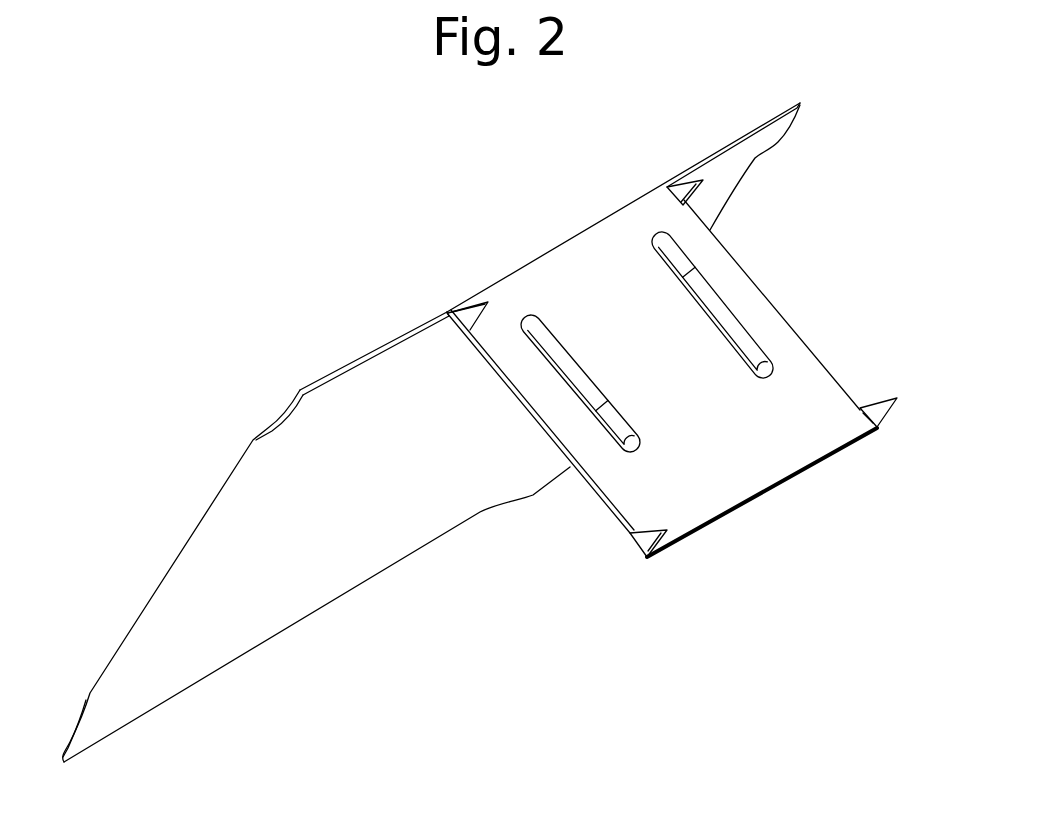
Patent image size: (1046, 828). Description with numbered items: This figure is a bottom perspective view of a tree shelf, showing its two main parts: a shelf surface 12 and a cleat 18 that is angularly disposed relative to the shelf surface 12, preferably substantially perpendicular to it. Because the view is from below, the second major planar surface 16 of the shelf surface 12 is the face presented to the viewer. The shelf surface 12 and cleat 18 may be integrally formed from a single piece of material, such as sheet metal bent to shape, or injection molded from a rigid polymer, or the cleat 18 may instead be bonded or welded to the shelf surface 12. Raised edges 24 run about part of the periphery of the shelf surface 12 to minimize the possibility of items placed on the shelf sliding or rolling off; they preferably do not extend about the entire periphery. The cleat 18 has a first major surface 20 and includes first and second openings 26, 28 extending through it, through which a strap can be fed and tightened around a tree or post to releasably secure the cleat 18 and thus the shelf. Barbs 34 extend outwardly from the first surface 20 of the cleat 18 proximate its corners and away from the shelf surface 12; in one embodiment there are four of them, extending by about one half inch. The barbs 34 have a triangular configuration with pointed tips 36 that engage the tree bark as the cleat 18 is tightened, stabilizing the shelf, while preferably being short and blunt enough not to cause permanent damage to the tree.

The shelf surface 12 is at (263, 370).
The second major planar surface 16 is at (362, 505).
The cleat 18 is at (832, 324).
The first major surface 20 is at (750, 457).
The raised edges 24 is at (183, 547).
The first opening 26 is at (716, 313).
The second opening 28 is at (583, 380).
The barbs 34 is at (702, 190).
The pointed tips 36 is at (498, 288).